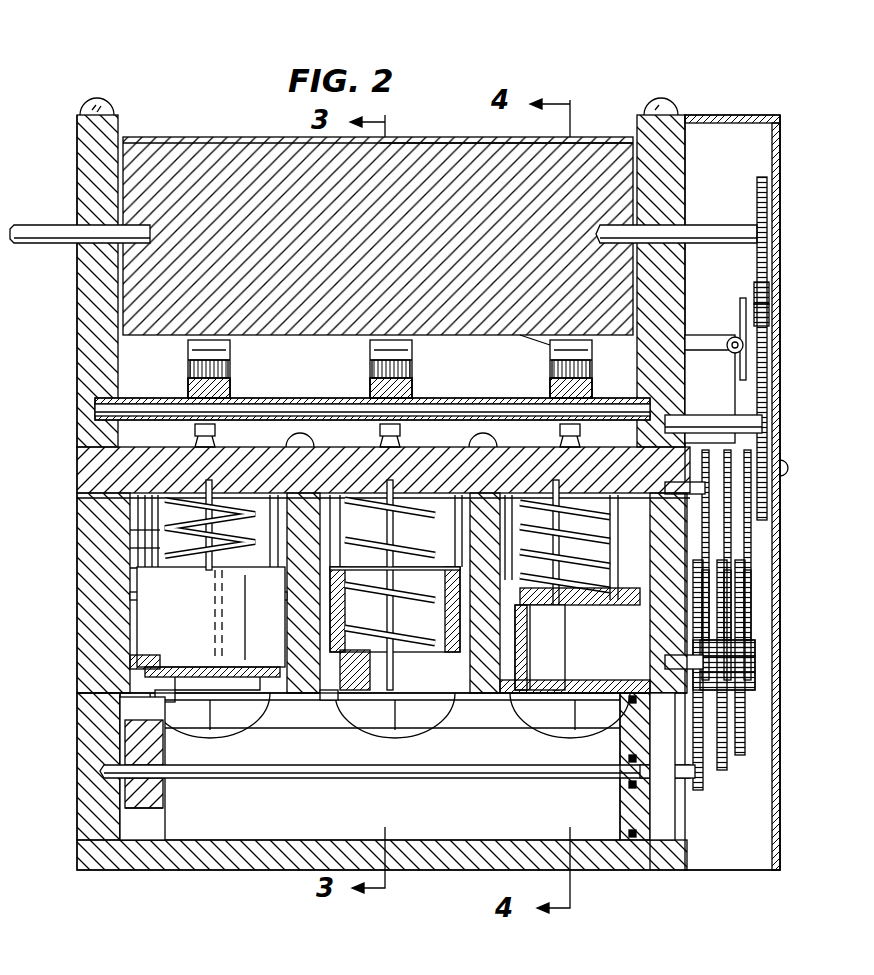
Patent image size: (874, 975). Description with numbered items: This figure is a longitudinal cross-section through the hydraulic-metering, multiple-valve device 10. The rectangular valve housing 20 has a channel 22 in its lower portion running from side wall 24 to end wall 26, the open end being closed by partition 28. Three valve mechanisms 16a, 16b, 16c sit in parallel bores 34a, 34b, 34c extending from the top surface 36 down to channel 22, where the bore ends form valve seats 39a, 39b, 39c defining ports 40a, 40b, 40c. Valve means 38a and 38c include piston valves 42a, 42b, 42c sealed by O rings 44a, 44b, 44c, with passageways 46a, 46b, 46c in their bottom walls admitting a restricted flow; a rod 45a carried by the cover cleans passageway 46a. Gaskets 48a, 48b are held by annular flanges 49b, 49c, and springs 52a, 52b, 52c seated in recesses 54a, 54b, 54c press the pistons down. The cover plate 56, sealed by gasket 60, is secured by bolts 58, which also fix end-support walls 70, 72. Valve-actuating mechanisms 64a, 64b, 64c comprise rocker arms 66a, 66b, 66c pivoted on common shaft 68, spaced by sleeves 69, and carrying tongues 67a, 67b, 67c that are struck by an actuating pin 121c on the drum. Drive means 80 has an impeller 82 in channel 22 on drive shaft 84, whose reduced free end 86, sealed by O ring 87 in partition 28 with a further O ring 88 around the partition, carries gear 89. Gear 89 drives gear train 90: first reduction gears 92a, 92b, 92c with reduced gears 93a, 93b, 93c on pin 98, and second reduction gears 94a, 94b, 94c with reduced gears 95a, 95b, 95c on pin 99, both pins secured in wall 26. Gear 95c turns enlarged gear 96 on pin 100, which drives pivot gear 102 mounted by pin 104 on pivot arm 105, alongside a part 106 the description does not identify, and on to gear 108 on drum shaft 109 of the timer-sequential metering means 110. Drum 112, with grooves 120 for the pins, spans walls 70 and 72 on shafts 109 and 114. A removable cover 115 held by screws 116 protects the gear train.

The hydraulic-metering multiple-valve device 10 is at (0, 128).
The bolts 58 is at (97, 100).
The timer-sequential metering means 110 is at (228, 165).
The cylindrical drum 112 is at (440, 165).
The elongated grooves 120 is at (572, 160).
The removable cover 115 is at (782, 145).
The end-support wall 72 is at (680, 186).
The end-support wall 70 is at (80, 303).
The shaft 114 is at (50, 234).
The drum shaft 109 is at (722, 238).
The gear 108 is at (768, 222).
The pin 104 is at (770, 300).
The pivot gear 102 is at (770, 322).
The pivot arm 105 is at (746, 370).
The pivot pin 106 is at (730, 340).
The pin 100 is at (700, 422).
The enlarged gear 96 is at (765, 442).
The screws 116 is at (788, 468).
The pin 99 is at (740, 510).
The reduced-diameter gear 95a is at (751, 562).
The reduced-diameter gear 95b is at (731, 552).
The reduced-diameter gear 95c is at (709, 540).
The second-set reduction gear 94a is at (751, 622).
The second-set reduction gear 94b is at (731, 610).
The second-set reduction gear 94c is at (709, 590).
The reduced-diameter gear 93a is at (755, 648).
The reduced-diameter gear 93b is at (755, 664).
The reduced-diameter gear 93c is at (755, 684).
The first-set reduction gear 92a is at (703, 745).
The first-set reduction gear 92b is at (727, 760).
The first-set reduction gear 92c is at (745, 745).
The gear train means 90 is at (755, 694).
The pin 98 is at (665, 660).
The end wall 26 is at (670, 628).
The spacer sleeves 69 is at (100, 400).
The common shaft 68 is at (430, 408).
The valve-actuating mechanism 64a is at (186, 392).
The valve-actuating mechanism 64b is at (370, 380).
The valve-actuating mechanism 64c is at (548, 366).
The rocker arm 66a is at (230, 384).
The rocker arm 66b is at (370, 386).
The rocker arm 66c is at (550, 388).
The tongue 67a is at (208, 350).
The tongue 67b is at (390, 350).
The tongue 67c is at (572, 350).
The T-shaped actuating pin 121c is at (530, 338).
The top surface 36 is at (312, 466).
The valve-housing cover plate 56 is at (80, 468).
The gasket 60 is at (80, 496).
The valve housing 20 is at (80, 660).
The valve means 38a is at (135, 620).
The rod 45a is at (130, 530).
The bore 34a is at (130, 548).
The piston valve 42a is at (130, 568).
The O ring 44a is at (130, 594).
The valve seat 39a is at (165, 670).
The passageway 46a is at (240, 652).
The spring 52a is at (205, 500).
The piston recess 54a is at (255, 500).
The valve gasket 48a is at (133, 662).
The annular flange 49c is at (155, 696).
The bore 34b is at (440, 551).
The valve seat 39b is at (350, 680).
The spring 52b is at (387, 520).
The piston recess 54b is at (445, 560).
The passageway 46b is at (410, 660).
The O ring 44b is at (358, 565).
The valve gasket 48b is at (360, 660).
The valve mechanism 16b is at (385, 700).
The communicating port 40b is at (395, 715).
The piston valve 42b is at (440, 705).
The valve means 38c is at (520, 498).
The spring 52c is at (560, 500).
The piston recess 54c is at (590, 498).
The O ring 44c is at (630, 530).
The piston valve 42c is at (630, 600).
The bore 34c is at (540, 647).
The passageway 46c is at (534, 646).
The valve seat 39c is at (545, 688).
The valve mechanism 16c is at (540, 705).
The communicating port 40c is at (573, 712).
The valve mechanism 16a is at (218, 705).
The communicating port 40a is at (215, 715).
The annular flange 49b is at (328, 702).
The side wall 24 is at (80, 720).
The channel 22 is at (300, 815).
The impeller 82 is at (165, 798).
The drive means 80 is at (170, 785).
The drive shaft 84 is at (428, 780).
The extended free end 86 is at (660, 800).
The gear 89 is at (675, 810).
The O-ring seal 87 is at (628, 784).
The O ring 88 is at (630, 840).
The partition 28 is at (655, 850).